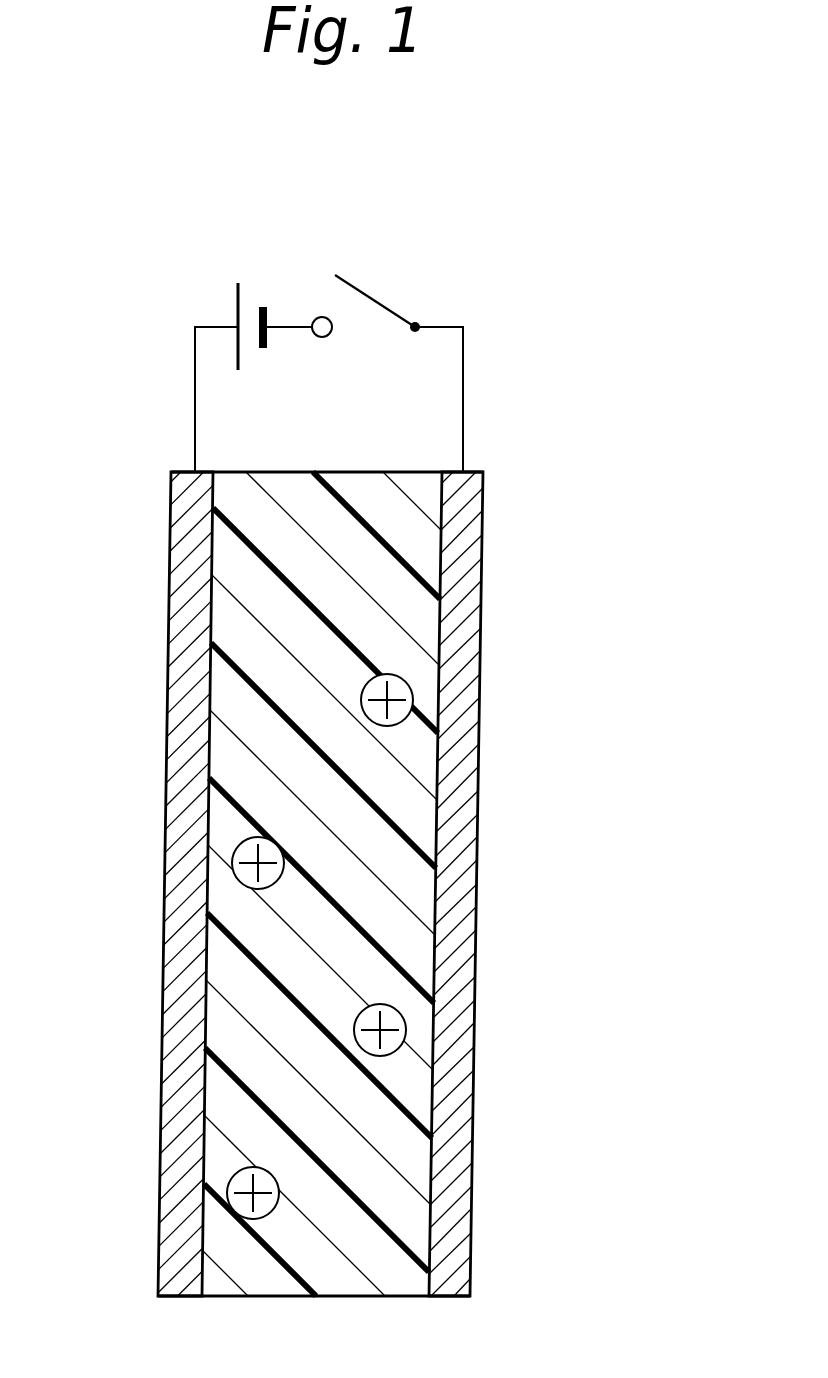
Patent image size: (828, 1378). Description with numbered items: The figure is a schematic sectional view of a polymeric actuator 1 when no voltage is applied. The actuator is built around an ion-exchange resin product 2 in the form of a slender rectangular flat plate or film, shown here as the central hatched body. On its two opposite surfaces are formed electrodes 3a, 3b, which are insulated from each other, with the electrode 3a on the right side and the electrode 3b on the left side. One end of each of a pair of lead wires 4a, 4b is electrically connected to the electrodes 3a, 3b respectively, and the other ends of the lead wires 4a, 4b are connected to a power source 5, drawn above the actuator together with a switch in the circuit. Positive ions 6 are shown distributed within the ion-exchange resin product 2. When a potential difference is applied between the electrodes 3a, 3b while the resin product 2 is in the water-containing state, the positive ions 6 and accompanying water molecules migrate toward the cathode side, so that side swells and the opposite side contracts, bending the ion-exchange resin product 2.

The polymeric actuator 1 is at (542, 712).
The ion-exchange resin product 2 is at (253, 592).
The electrode 3a is at (465, 900).
The electrode 3b is at (185, 883).
The lead wire 4a is at (463, 413).
The lead wire 4b is at (195, 397).
The power source 5 is at (377, 300).
The positive ions 6 is at (407, 1020).